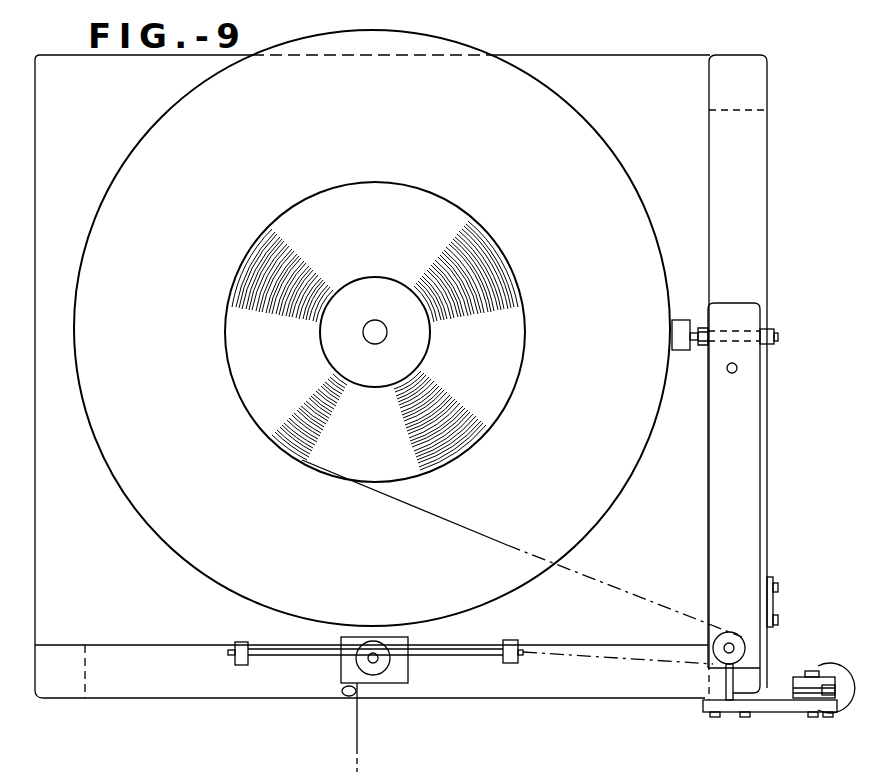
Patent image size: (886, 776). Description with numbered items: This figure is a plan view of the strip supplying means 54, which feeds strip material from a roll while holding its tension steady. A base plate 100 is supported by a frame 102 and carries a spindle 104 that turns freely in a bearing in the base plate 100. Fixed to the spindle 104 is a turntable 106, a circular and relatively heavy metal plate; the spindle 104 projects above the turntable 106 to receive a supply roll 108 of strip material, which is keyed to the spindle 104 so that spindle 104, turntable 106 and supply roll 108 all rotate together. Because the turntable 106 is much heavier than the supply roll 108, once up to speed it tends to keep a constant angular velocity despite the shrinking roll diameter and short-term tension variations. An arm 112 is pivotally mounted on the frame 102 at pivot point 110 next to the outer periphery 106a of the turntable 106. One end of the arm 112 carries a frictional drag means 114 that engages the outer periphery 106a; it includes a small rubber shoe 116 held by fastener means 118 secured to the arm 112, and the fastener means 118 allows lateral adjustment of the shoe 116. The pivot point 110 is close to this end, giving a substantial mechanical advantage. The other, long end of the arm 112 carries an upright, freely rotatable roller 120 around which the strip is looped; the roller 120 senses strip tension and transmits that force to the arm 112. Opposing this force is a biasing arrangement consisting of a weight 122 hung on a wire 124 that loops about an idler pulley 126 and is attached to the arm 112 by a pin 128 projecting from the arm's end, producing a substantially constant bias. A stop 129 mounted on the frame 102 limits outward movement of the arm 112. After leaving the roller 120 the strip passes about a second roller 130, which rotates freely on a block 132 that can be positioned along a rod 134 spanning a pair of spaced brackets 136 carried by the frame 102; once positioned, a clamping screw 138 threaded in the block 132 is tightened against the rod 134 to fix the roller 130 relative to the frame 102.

The strip supplying means 54 is at (670, 49).
The base plate 100 is at (646, 120).
The frame 102 is at (768, 136).
The spindle 104 is at (382, 288).
The turntable 106 is at (520, 194).
The outer periphery 106a is at (505, 600).
The supply roll 108 is at (243, 366).
The pivot point 110 is at (738, 368).
The arm 112 is at (752, 441).
The frictional drag means 114 is at (694, 302).
The shoe 116 is at (686, 352).
The fastener means 118 is at (733, 327).
The roller 120 is at (740, 640).
The weight 122 is at (811, 664).
The wire 124 is at (789, 697).
The idler pulley 126 is at (838, 707).
The pin 128 is at (748, 688).
The stop 129 is at (778, 602).
The second roller 130 is at (372, 672).
The block 132 is at (413, 670).
The rod 134 is at (277, 657).
The brackets 136 is at (238, 665).
The clamping screw 138 is at (343, 700).